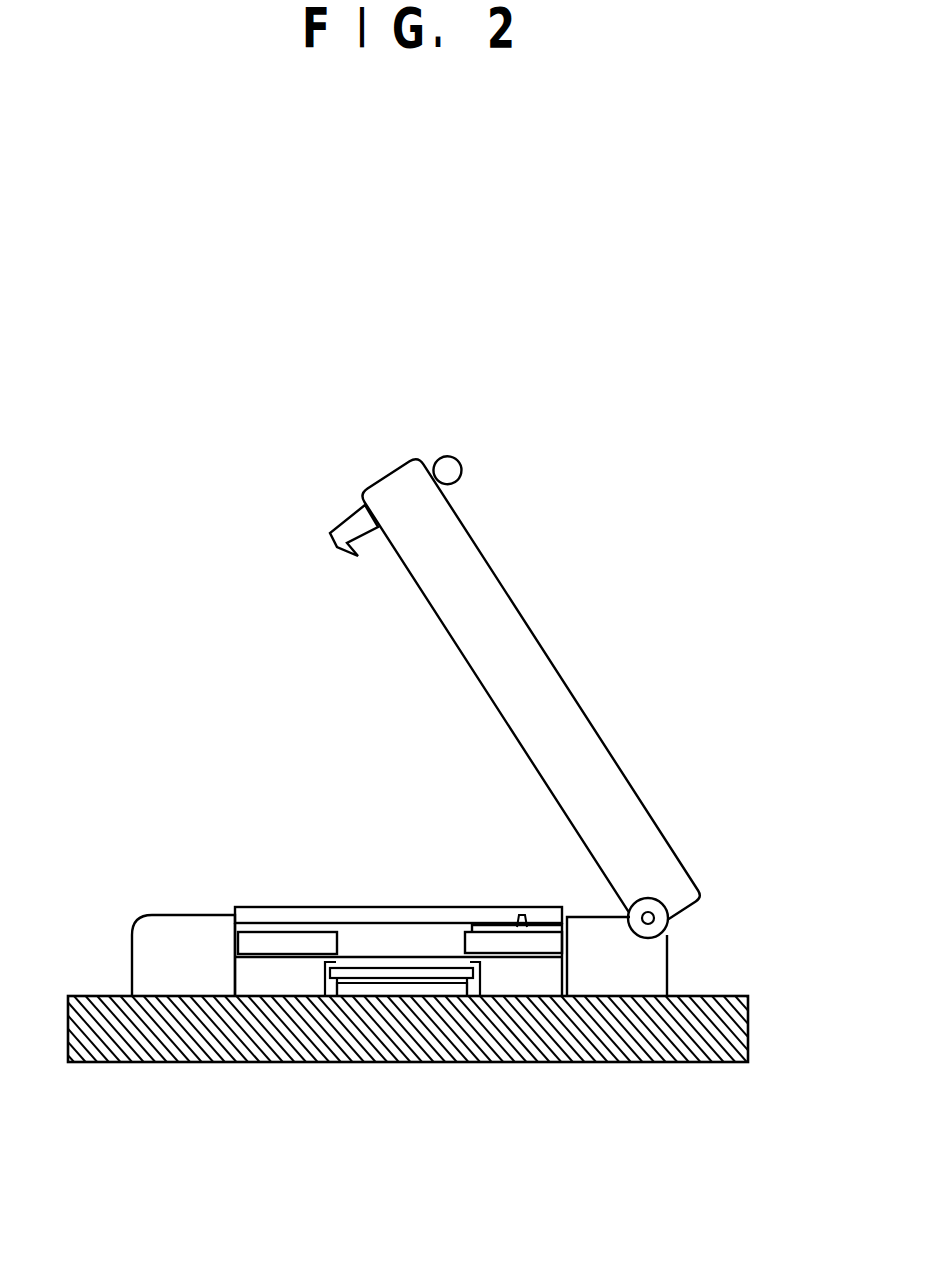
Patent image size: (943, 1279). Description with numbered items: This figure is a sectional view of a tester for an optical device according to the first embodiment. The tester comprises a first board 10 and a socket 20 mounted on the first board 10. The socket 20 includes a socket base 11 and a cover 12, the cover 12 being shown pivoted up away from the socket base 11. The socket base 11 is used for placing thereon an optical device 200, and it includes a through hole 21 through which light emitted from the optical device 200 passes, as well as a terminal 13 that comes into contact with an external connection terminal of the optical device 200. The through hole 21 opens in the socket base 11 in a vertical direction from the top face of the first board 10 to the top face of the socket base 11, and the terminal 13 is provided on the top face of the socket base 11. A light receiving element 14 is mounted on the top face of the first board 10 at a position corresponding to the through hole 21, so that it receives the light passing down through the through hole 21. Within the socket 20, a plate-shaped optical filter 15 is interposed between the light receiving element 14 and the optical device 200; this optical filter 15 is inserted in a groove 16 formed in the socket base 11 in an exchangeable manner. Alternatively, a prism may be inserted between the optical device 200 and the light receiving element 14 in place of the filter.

The first board 10 is at (172, 1063).
The socket base 11 is at (183, 940).
The cover 12 is at (523, 673).
The terminal 13 is at (482, 923).
The light receiving element 14 is at (368, 990).
The optical filter 15 is at (428, 972).
The groove 16 is at (480, 988).
The socket 20 is at (640, 768).
The through hole 21 is at (400, 947).
The optical device 200 is at (308, 913).